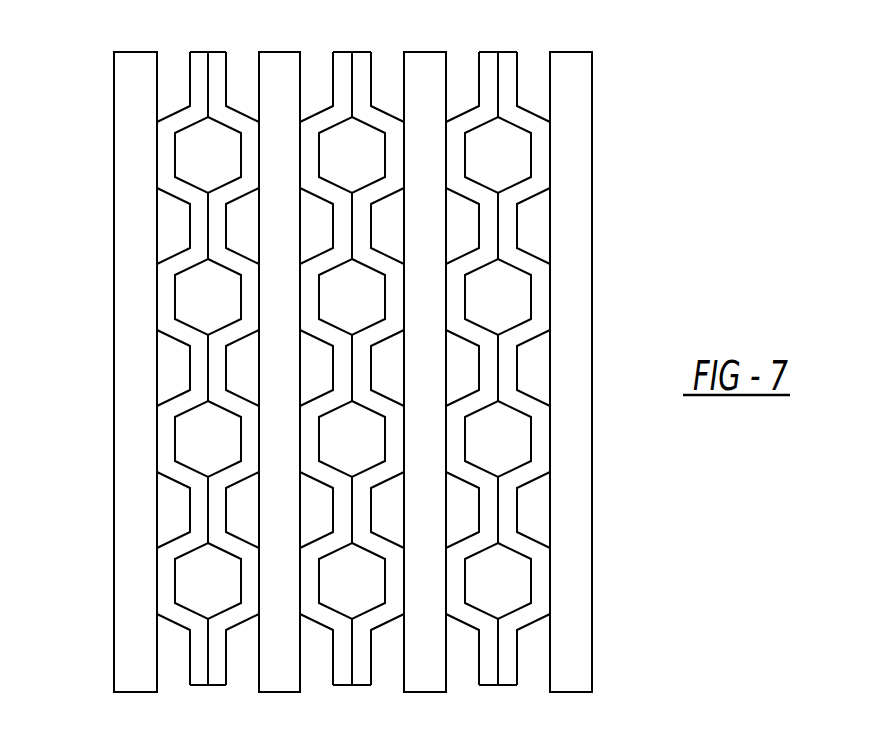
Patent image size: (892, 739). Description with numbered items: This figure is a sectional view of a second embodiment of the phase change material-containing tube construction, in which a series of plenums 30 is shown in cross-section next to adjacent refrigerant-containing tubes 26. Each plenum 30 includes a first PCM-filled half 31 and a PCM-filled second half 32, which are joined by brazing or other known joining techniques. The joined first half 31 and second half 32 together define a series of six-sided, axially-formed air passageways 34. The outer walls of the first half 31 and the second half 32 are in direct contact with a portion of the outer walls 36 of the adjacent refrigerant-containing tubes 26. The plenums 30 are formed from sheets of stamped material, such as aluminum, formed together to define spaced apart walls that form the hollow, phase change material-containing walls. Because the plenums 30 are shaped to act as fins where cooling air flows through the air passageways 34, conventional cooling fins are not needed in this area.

The refrigerant-containing tube 26 is at (130, 225).
The plenum 30 is at (217, 83).
The first PCM-filled half 31 is at (170, 155).
The PCM-filled second half 32 is at (252, 297).
The six-sided axially-formed air passageway 34 is at (205, 443).
The outer wall 36 is at (302, 87).